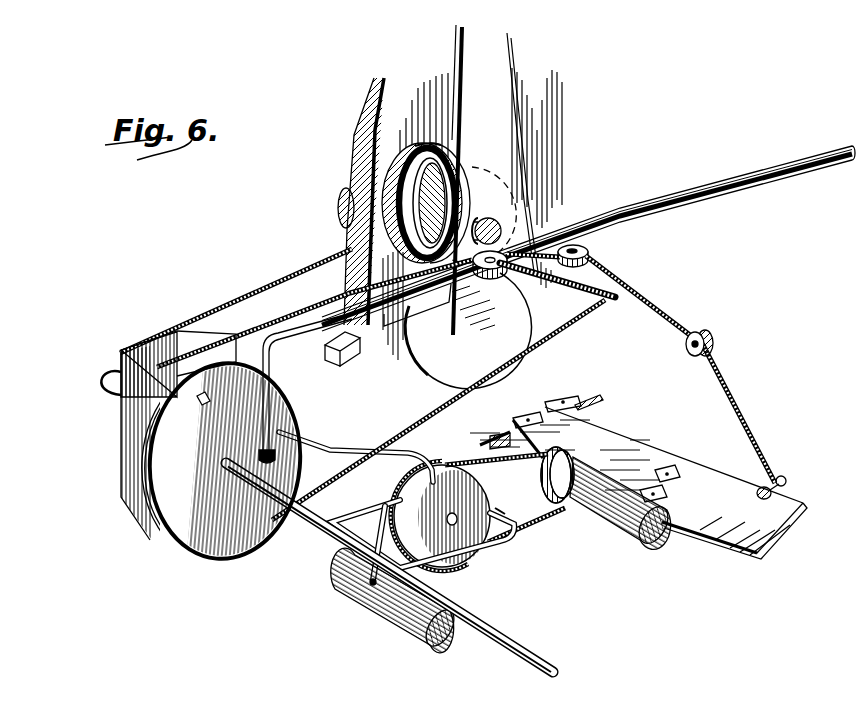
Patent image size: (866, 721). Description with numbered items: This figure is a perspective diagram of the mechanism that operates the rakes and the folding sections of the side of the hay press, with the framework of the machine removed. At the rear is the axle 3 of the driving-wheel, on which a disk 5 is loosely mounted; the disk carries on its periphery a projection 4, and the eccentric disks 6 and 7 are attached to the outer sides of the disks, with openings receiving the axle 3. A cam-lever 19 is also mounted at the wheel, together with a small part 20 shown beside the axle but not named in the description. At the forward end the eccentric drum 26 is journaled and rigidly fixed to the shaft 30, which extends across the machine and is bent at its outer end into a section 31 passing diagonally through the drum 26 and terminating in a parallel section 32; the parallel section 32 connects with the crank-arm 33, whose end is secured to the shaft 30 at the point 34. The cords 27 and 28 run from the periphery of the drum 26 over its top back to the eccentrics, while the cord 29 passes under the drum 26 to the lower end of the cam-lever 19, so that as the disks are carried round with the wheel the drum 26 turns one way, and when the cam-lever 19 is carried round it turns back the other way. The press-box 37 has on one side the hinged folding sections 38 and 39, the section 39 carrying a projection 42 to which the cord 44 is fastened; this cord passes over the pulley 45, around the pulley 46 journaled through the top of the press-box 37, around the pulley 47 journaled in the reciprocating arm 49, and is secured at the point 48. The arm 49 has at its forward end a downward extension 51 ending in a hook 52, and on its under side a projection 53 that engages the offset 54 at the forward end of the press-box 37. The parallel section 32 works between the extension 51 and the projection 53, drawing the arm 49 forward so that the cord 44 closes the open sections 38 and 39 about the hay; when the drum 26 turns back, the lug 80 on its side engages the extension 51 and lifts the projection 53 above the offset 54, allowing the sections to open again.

The cam-lever 19 is at (450, 192).
The projection 4 is at (470, 158).
The disk 5 is at (400, 180).
The eccentric disk 6 is at (427, 203).
The eccentric disk 7 is at (490, 181).
The pin 20 is at (486, 218).
The axle 3 is at (499, 226).
The pulley 47 is at (472, 265).
The projection 53 is at (437, 306).
The reciprocating arm 49 is at (622, 208).
The pulley 46 is at (590, 247).
The point 48 is at (613, 303).
The pulley 45 is at (712, 333).
The cord 44 is at (749, 399).
The projection 42 is at (785, 488).
The press-box 37 is at (598, 398).
The folding section 38 is at (602, 424).
The folding section 39 is at (638, 489).
The cord 28 is at (267, 292).
The cord 27 is at (283, 324).
The section 31 is at (118, 372).
The downward extension 51 is at (272, 385).
The lug 80 is at (205, 402).
The offset 54 is at (342, 361).
The parallel section 32 is at (297, 436).
The eccentric drum 26 is at (214, 456).
The hook 52 is at (278, 456).
The cord 29 is at (357, 468).
The crank-arm 33 is at (430, 458).
The shaft 30 is at (297, 522).
The point 34 is at (338, 534).